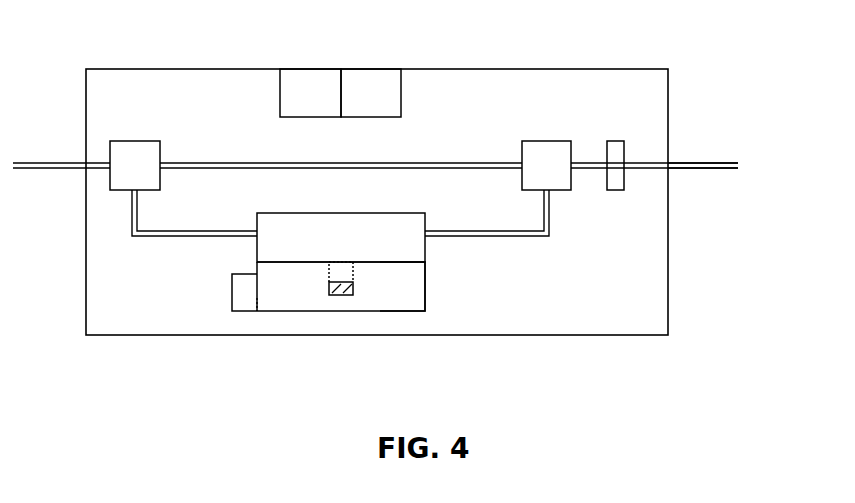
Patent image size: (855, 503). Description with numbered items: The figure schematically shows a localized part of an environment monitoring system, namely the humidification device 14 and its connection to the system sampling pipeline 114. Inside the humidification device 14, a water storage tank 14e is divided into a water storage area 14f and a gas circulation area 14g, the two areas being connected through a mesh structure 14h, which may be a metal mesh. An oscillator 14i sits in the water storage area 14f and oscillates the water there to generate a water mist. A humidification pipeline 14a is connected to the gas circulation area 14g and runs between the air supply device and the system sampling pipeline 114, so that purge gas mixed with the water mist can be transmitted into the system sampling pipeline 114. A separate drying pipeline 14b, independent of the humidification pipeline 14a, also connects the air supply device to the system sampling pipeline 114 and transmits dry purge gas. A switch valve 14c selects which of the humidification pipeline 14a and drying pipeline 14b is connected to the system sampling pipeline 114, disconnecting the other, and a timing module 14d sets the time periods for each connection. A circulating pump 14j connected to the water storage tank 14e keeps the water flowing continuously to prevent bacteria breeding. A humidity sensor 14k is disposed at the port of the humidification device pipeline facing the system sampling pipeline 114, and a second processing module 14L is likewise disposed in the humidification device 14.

The humidification device 14 is at (564, 69).
The humidification pipeline 14a is at (527, 237).
The drying pipeline 14b is at (193, 162).
The switch valve 14c is at (135, 141).
The timing module 14d is at (296, 90).
The second processing module 14L is at (386, 92).
The humidity sensor 14k is at (624, 141).
The water storage tank 14e is at (299, 312).
The water storage area 14f is at (412, 303).
The gas circulation area 14g is at (268, 252).
The mesh structure 14h is at (353, 285).
The oscillator 14i is at (340, 296).
The circulating pump 14j is at (237, 305).
The system sampling pipeline 114 is at (716, 162).